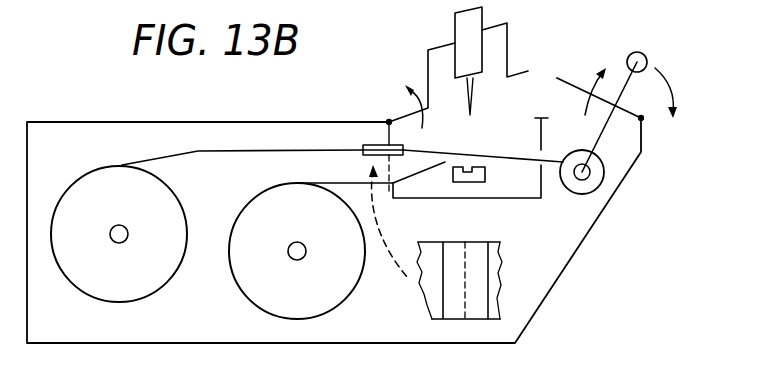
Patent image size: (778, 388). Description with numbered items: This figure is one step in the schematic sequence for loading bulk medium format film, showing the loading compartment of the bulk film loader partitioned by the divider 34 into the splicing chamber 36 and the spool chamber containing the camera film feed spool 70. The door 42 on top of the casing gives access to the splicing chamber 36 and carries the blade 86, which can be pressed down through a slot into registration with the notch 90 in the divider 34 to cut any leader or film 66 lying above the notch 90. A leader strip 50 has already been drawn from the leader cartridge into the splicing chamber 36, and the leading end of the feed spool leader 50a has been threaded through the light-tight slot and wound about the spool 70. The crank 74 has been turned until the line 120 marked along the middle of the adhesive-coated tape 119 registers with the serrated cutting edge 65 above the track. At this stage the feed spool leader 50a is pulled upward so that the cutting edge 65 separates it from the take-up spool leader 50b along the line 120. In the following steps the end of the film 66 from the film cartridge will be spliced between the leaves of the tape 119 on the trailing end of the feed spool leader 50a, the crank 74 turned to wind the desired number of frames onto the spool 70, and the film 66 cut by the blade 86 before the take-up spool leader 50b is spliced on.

The divider 34 is at (396, 199).
The splicing chamber 36 is at (527, 189).
The door 42 is at (428, 58).
The leader strip 50 is at (200, 152).
The feed spool leader 50a is at (500, 252).
The take-up spool leader 50b is at (432, 273).
The cutting edge 65 is at (400, 128).
The film 66 is at (342, 182).
The camera film feed spool 70 is at (603, 176).
The crank 74 is at (630, 54).
The blade 86 is at (513, 97).
The notch 90 is at (455, 183).
The adhesive-coated tape 119 is at (365, 145).
The line 120 is at (467, 292).